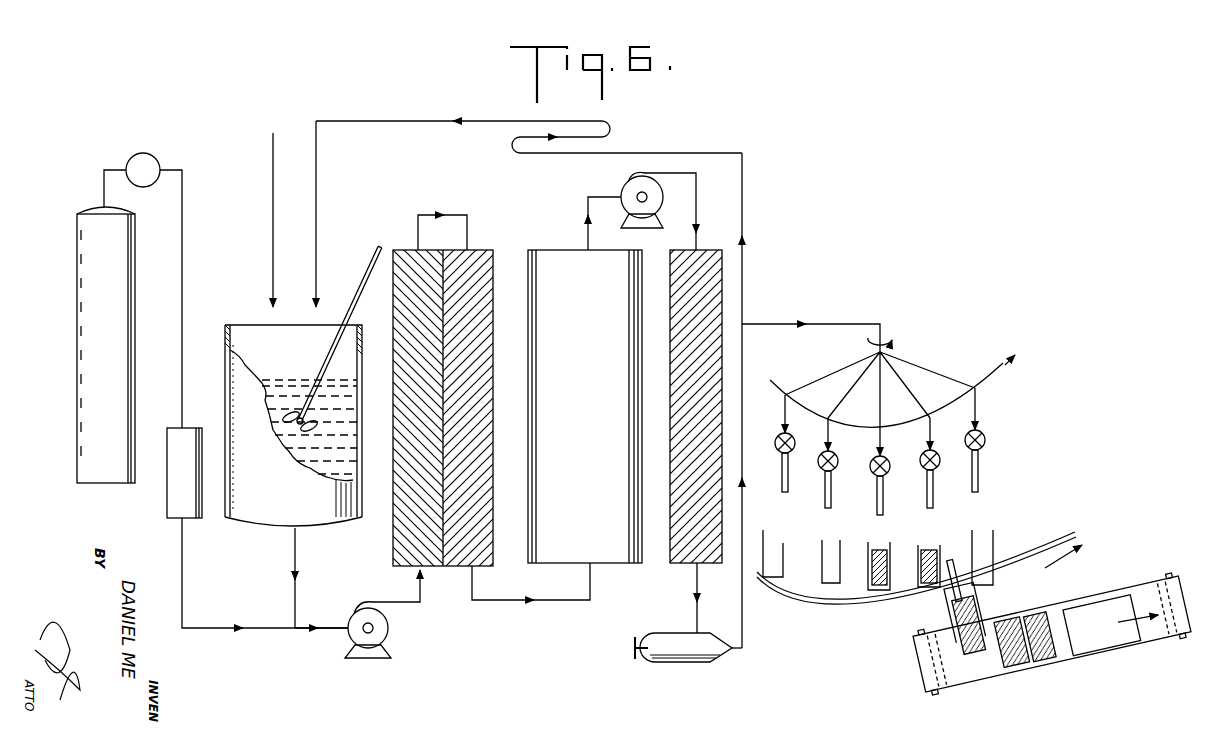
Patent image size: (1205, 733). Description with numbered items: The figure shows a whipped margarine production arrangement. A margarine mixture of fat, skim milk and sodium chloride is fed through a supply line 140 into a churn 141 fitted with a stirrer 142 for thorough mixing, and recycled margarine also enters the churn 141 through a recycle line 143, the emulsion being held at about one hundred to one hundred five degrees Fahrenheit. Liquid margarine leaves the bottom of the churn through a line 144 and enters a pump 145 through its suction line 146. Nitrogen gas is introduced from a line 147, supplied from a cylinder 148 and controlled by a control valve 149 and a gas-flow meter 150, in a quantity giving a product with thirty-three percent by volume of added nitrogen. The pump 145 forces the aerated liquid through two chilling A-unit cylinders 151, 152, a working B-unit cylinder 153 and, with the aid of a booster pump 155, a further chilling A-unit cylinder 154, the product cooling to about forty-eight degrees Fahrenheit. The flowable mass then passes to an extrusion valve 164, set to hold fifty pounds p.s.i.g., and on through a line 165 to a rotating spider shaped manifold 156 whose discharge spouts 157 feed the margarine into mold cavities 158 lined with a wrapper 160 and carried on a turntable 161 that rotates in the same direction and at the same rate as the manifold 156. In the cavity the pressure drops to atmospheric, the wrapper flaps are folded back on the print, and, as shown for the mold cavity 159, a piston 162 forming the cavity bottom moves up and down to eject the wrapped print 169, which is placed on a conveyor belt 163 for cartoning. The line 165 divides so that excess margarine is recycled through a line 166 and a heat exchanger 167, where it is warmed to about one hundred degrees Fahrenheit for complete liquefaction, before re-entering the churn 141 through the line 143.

The supply line 140 is at (272, 183).
The churn 141 is at (290, 499).
The stirrer 142 is at (372, 270).
The recycle line 143 is at (318, 200).
The line 144 is at (300, 548).
The pump 145 is at (352, 636).
The suction line 146 is at (332, 625).
The line 147 is at (198, 630).
The cylinder 148 is at (77, 282).
The control valve 149 is at (152, 163).
The gas-flow meter 150 is at (167, 503).
The chilling A-unit cylinder 151 is at (393, 540).
The chilling A-unit cylinder 152 is at (482, 325).
The working B-unit cylinder 153 is at (604, 404).
The chilling A-unit cylinder 154 is at (682, 280).
The booster pump 155 is at (630, 191).
The rotating spider shaped manifold 156 is at (1000, 368).
The discharge spouts 157 is at (825, 490).
The mold cavities 158 is at (780, 552).
The mold cavity 159 is at (947, 598).
The wrapper 160 is at (870, 545).
The turntable 161 is at (797, 598).
The piston 162 is at (982, 600).
The conveyor belt 163 is at (963, 680).
The extrusion valve 164 is at (673, 660).
The line 165 is at (744, 347).
The line 166 is at (744, 211).
The heat exchanger 167 is at (618, 128).
The wrapped print 169 is at (1013, 665).